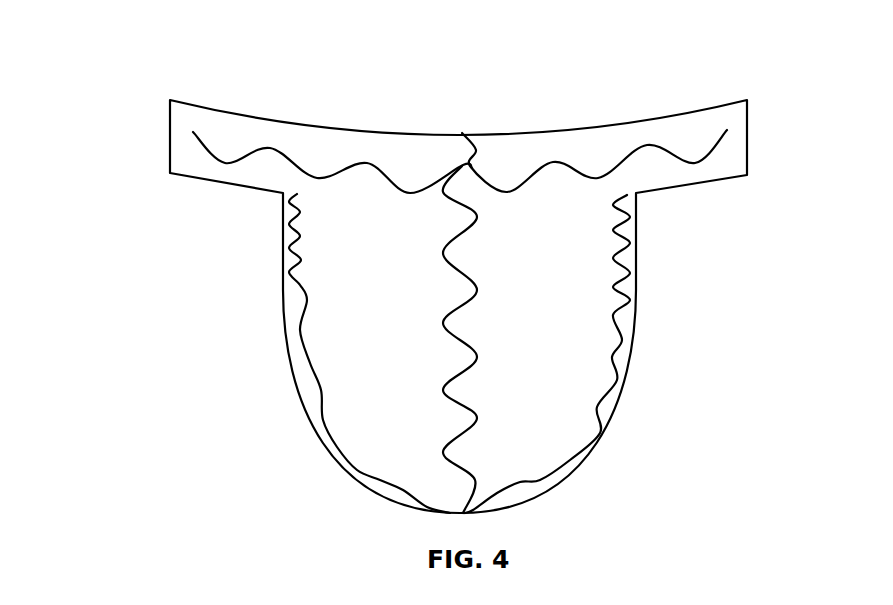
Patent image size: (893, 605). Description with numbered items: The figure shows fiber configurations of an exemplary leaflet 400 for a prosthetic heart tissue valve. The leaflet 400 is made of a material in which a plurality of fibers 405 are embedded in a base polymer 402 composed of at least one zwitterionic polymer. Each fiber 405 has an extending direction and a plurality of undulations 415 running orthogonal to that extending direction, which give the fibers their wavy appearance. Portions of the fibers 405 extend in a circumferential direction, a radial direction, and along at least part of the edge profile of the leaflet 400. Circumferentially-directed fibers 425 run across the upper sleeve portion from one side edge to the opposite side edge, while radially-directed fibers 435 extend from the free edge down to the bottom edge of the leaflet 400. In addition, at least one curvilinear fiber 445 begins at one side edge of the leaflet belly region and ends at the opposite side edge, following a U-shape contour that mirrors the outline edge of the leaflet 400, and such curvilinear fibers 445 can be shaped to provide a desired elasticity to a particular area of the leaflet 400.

The leaflet 400 is at (150, 34).
The base polymer 402 is at (325, 256).
The fibers 405 is at (512, 205).
The undulations 415 is at (541, 153).
The circumferentially-directed fibers 425 is at (334, 162).
The radially-directed fibers 435 is at (436, 330).
The curvilinear fiber 445 is at (356, 440).